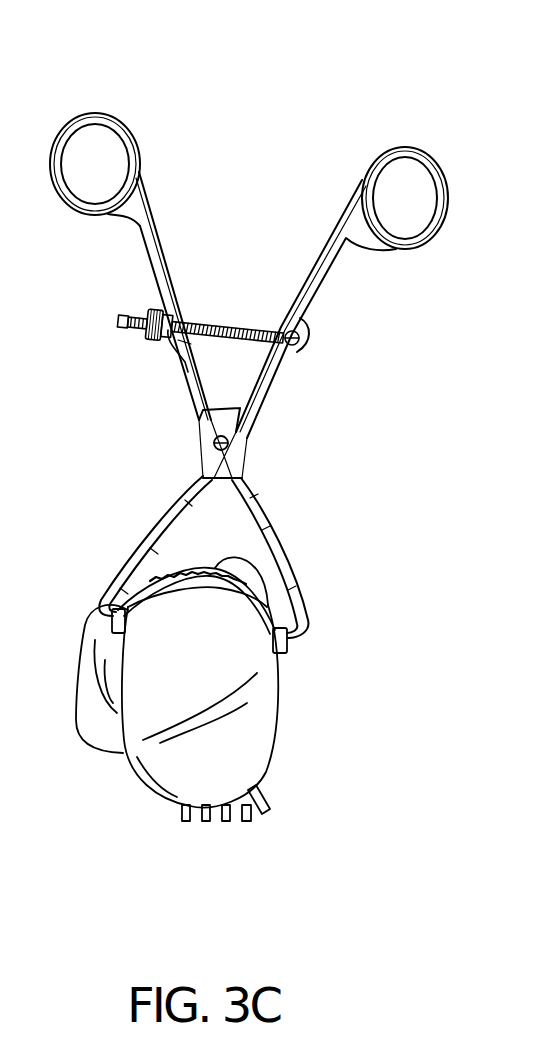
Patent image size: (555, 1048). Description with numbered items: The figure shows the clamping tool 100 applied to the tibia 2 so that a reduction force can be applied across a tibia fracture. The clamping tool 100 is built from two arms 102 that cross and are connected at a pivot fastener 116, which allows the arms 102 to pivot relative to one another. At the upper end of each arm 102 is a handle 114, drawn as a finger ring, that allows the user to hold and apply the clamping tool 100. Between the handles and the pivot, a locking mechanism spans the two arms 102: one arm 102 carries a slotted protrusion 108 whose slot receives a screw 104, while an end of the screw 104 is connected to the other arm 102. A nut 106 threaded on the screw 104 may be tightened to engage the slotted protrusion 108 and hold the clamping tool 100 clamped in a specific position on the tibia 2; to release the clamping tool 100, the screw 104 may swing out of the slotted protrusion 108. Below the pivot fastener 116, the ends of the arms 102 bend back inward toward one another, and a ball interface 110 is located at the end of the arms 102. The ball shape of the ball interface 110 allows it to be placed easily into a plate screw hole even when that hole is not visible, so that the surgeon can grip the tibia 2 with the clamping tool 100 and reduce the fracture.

The clamping tool 100 is at (422, 138).
The arms 102 is at (183, 392).
The screw 104 is at (222, 327).
The nut 106 is at (157, 308).
The slotted protrusion 108 is at (180, 362).
The ball interface 110 is at (282, 655).
The handle 114 is at (83, 113).
The pivot fastener 116 is at (230, 445).
The tibia 2 is at (240, 750).